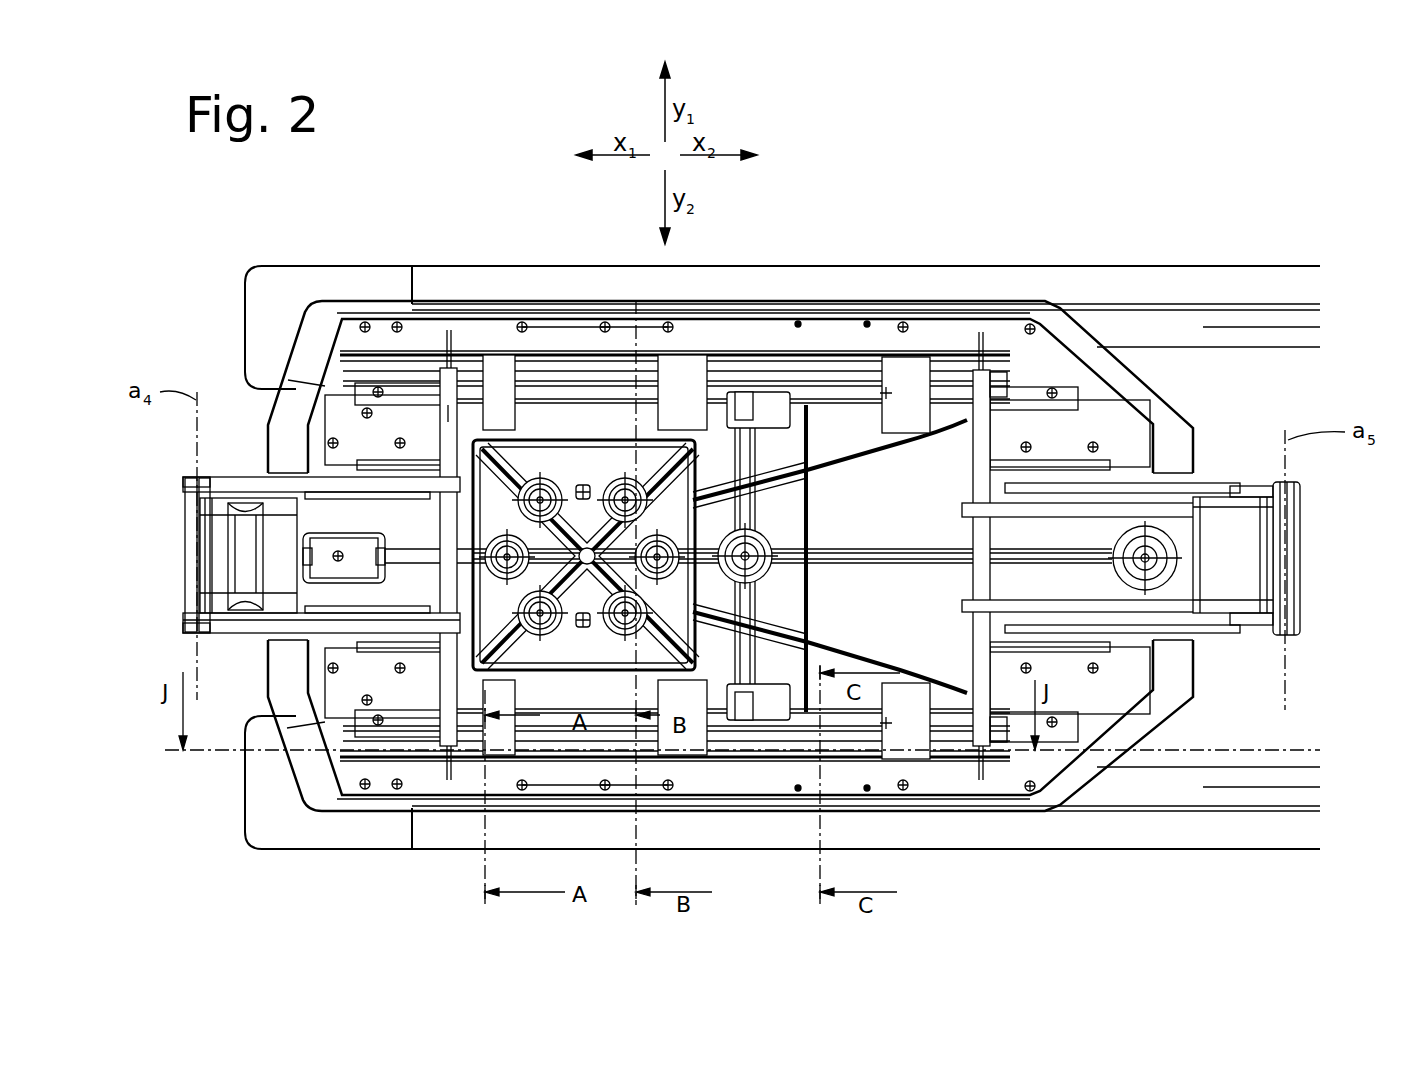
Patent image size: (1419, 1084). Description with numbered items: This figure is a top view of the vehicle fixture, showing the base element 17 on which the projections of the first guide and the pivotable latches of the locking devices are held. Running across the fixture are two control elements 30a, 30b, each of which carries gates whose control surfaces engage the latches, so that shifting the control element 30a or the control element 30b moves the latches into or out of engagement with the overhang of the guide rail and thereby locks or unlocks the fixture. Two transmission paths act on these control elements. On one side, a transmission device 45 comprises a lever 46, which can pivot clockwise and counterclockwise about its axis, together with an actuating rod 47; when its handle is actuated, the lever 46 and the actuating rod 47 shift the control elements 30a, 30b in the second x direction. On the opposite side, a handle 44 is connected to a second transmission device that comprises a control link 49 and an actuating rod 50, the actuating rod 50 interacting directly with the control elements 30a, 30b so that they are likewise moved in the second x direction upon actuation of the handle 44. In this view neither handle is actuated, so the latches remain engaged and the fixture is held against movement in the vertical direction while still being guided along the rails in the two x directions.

The base element 17 is at (1083, 332).
The control element 30a is at (773, 760).
The control element 30b is at (778, 352).
The handle 44 is at (1303, 548).
The transmission device 45 is at (183, 551).
The lever 46 is at (308, 610).
The actuating rod 47 is at (447, 415).
The control link 49 is at (1200, 627).
The actuating rod 50 is at (983, 397).